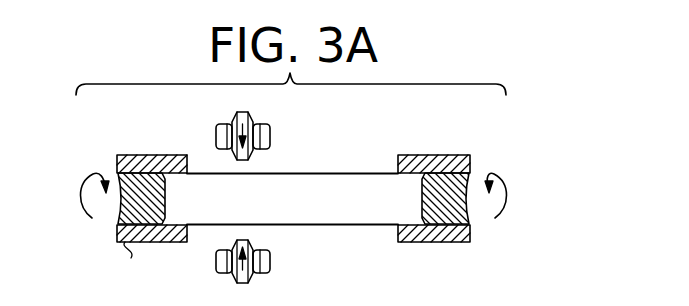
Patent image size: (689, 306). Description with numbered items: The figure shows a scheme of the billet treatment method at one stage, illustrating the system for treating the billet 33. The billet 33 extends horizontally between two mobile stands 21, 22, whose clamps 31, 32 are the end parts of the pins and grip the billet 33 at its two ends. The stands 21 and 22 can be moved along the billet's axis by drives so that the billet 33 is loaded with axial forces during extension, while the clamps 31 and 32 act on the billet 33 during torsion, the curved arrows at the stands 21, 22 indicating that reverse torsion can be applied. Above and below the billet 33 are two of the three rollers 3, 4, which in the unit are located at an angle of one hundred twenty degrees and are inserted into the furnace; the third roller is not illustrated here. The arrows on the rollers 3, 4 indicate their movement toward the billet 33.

The roller 3 is at (252, 136).
The roller 4 is at (262, 272).
The mobile stand 21 is at (122, 219).
The mobile stand 22 is at (447, 212).
The clamp 31 is at (163, 155).
The clamp 32 is at (420, 156).
The billet 33 is at (320, 183).